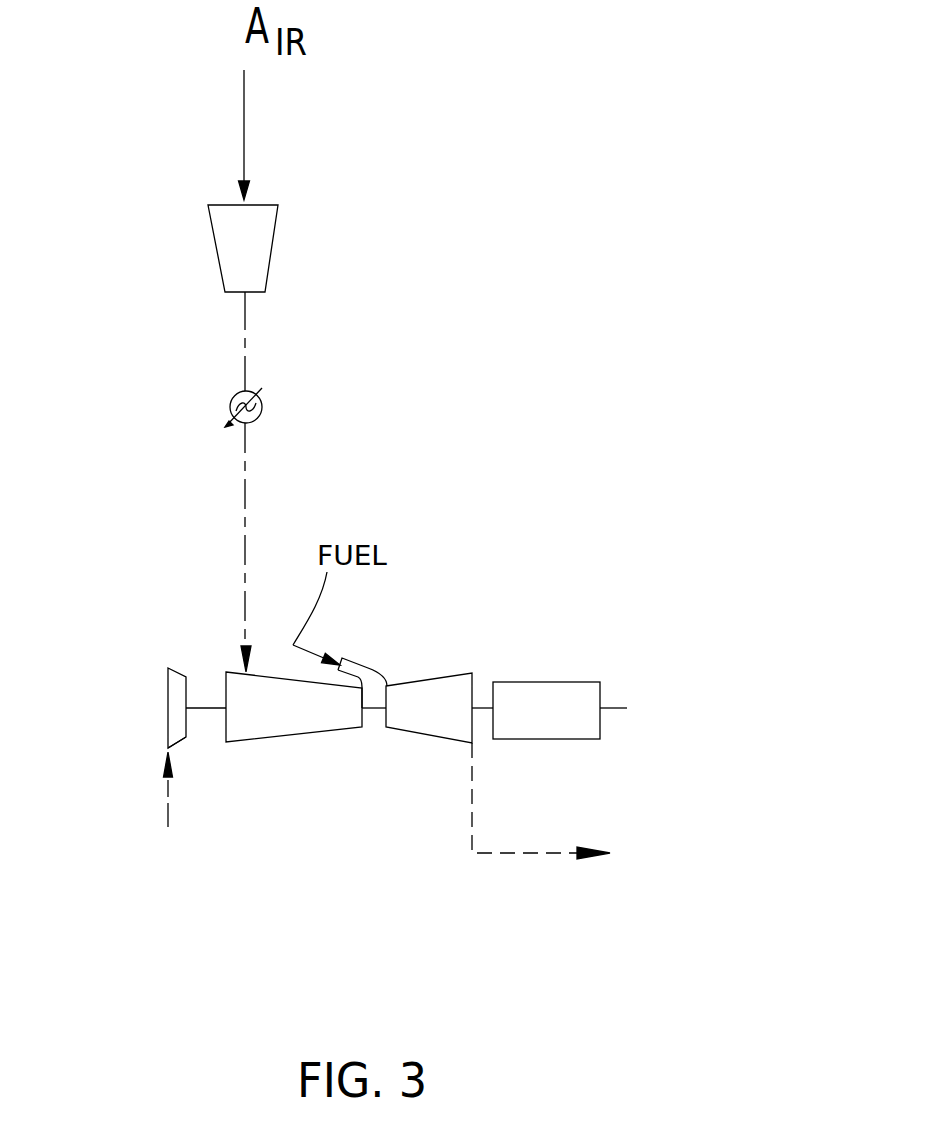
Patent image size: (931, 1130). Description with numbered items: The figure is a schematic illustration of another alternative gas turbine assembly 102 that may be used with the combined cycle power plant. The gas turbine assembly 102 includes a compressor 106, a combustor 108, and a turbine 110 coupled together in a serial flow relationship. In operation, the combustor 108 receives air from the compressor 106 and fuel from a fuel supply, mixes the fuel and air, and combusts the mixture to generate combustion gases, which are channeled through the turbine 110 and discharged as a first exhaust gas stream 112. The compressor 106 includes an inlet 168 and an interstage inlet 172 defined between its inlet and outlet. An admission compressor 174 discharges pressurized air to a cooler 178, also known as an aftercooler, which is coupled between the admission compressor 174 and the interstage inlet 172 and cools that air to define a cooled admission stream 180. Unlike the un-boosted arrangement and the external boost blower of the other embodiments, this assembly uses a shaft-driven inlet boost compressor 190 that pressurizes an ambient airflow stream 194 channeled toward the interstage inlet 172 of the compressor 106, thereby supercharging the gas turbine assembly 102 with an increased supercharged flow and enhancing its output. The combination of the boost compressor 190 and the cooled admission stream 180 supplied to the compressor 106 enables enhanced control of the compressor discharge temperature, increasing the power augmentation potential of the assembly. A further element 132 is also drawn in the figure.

The gas turbine assembly 102 is at (345, 855).
The compressor 106 is at (293, 737).
The combustor 108 is at (365, 668).
The turbine 110 is at (428, 680).
The first exhaust gas stream 112 is at (497, 855).
The generator 132 is at (538, 740).
The inlet 168 is at (203, 665).
The interstage inlet 172 is at (257, 659).
The admission compressor 174 is at (272, 247).
The cooler 178 is at (263, 405).
The cooled admission stream 180 is at (243, 538).
The shaft-driven boost compressor 190 is at (186, 737).
The ambient airflow stream 194 is at (167, 803).